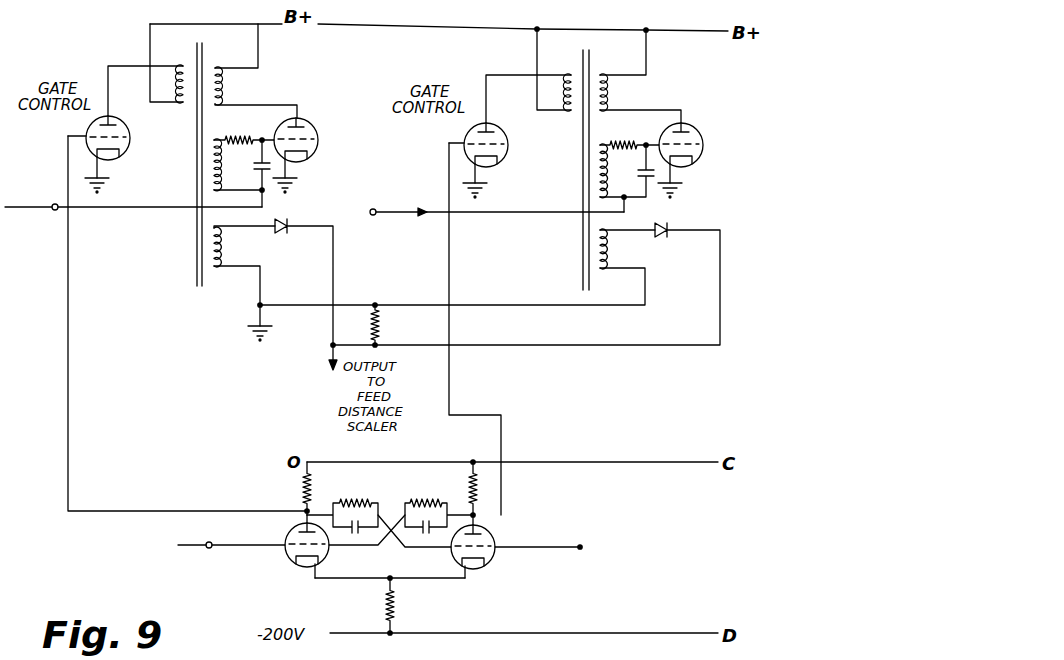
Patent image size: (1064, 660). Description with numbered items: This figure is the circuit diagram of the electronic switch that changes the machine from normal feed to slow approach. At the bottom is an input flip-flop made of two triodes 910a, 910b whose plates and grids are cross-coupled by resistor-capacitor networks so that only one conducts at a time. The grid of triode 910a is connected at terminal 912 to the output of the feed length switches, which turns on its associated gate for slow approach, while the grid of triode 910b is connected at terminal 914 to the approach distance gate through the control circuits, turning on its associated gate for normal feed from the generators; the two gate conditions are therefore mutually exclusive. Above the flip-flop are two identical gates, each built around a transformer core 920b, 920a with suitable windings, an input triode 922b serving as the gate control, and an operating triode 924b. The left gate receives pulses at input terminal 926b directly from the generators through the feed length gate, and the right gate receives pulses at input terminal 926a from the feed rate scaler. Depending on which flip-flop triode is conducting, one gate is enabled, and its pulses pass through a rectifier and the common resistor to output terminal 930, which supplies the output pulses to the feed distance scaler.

The core 920b is at (215, 66).
The core 920a is at (600, 75).
The input triode 922b is at (126, 152).
The operating triode 924b is at (315, 154).
The input terminal 926b is at (56, 211).
The input terminal 926a is at (372, 216).
The output terminal 930 is at (331, 347).
The terminal 912 is at (210, 548).
The triode 910a is at (322, 553).
The triode 910b is at (492, 563).
The terminal 914 is at (581, 551).